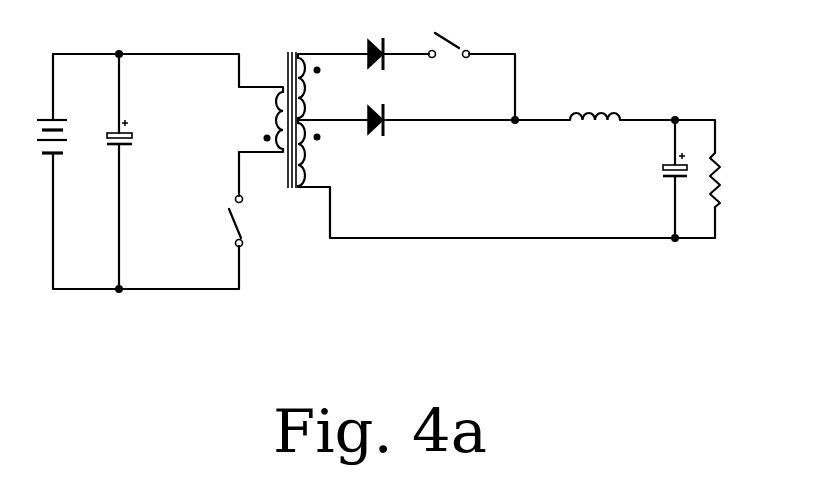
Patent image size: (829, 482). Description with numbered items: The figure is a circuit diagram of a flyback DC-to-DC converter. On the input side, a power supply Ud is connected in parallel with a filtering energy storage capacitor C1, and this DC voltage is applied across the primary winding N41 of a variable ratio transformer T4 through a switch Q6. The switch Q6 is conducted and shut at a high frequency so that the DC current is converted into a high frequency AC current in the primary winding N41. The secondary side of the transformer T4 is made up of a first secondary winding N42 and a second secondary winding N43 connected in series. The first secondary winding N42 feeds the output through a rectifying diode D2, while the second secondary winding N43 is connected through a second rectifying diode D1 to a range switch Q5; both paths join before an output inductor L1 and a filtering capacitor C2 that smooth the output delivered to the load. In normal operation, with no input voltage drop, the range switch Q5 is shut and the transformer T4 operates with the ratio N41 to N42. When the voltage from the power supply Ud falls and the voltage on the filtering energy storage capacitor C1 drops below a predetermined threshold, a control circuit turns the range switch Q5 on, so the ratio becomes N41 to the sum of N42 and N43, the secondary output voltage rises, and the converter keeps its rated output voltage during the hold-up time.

The power supply Ud is at (63, 124).
The filtering energy storage capacitor C1 is at (131, 130).
The switch Q6 is at (212, 220).
The variable ratio transformer T4 is at (288, 108).
The primary winding N41 is at (256, 119).
The second secondary winding N43 is at (322, 87).
The first secondary winding N42 is at (322, 153).
The second rectifying diode D1 is at (382, 43).
The rectifying diode D2 is at (382, 135).
The range switch Q5 is at (449, 36).
The output inductor L1 is at (595, 105).
The filtering capacitor C2 is at (661, 179).